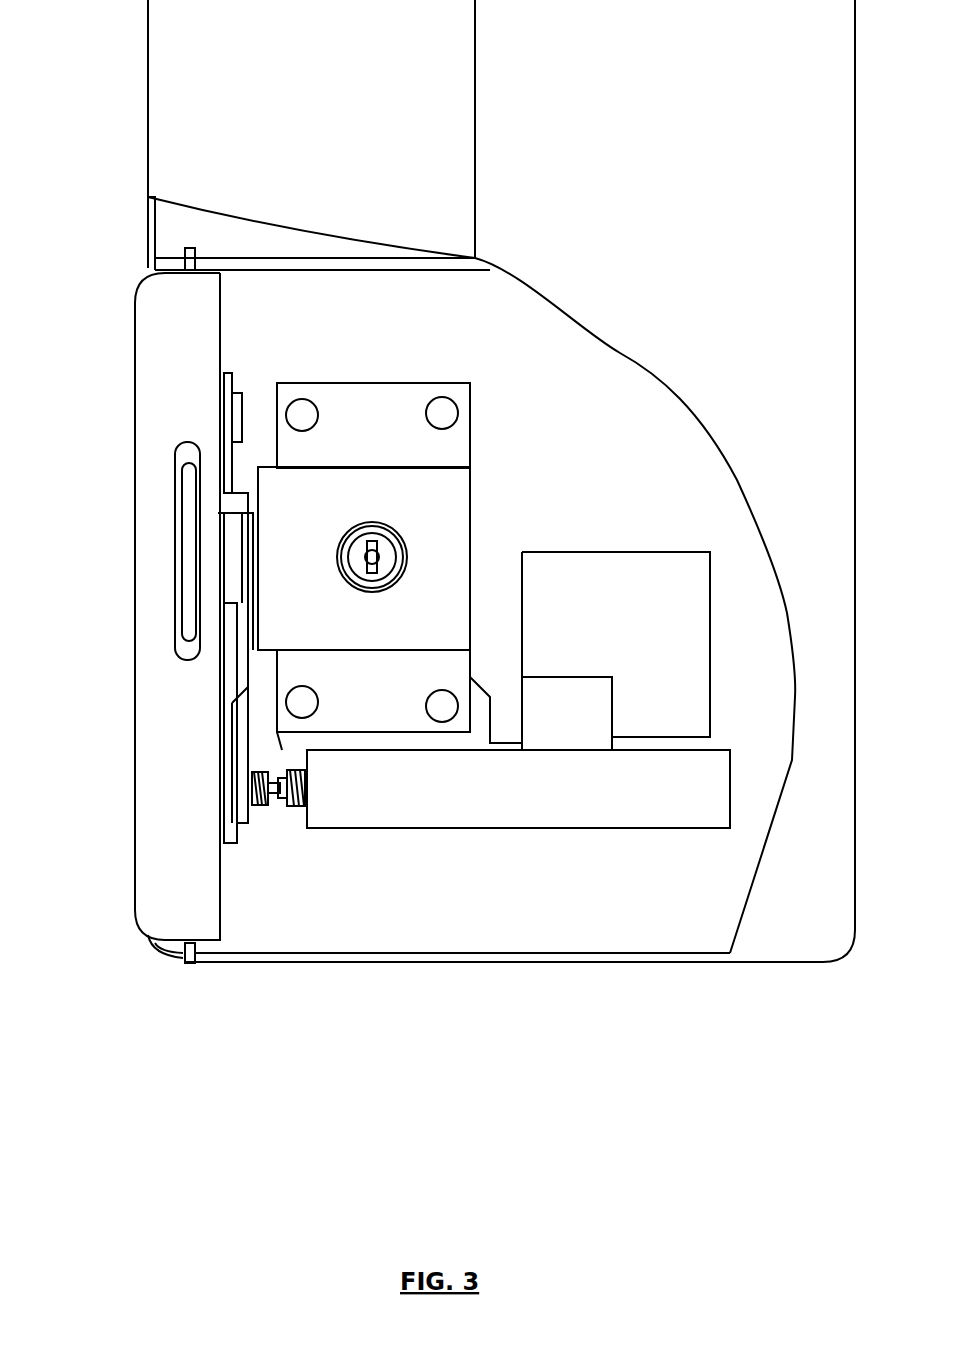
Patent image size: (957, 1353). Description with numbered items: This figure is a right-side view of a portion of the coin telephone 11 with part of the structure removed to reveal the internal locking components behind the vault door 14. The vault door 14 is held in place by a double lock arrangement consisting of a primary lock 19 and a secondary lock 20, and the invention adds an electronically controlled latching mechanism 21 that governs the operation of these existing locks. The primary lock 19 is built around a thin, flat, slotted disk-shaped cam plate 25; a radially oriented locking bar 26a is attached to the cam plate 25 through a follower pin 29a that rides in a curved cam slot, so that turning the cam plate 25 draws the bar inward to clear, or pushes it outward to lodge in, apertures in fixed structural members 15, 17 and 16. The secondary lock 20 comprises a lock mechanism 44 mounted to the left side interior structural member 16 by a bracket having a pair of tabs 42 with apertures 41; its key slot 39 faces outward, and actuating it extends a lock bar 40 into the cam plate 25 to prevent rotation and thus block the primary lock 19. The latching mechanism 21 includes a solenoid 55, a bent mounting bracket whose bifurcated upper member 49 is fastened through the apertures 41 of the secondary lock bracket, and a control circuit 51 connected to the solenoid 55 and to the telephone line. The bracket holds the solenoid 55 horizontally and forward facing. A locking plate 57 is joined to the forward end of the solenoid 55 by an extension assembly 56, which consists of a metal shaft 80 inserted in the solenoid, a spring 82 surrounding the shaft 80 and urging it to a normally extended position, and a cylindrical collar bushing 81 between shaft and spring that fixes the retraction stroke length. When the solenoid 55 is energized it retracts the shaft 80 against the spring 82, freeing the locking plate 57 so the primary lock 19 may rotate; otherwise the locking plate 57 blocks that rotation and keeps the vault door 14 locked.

The door assembly 11 is at (263, 183).
The vault door 14 is at (135, 633).
The fixed structural member 15 is at (155, 962).
The left side interior structural member 16 is at (758, 905).
The fixed structural member 17 is at (611, 473).
The primary lock 19 is at (237, 357).
The secondary lock 20 is at (478, 365).
The latching mechanism 21 is at (489, 838).
The cam plate 25 is at (244, 547).
The locking bar 26a is at (192, 248).
The follower pin 29a is at (242, 418).
The key slot 39 is at (397, 535).
The lock bar 40 is at (254, 582).
The apertures 41 is at (307, 420).
The tabs 42 is at (455, 443).
The lock mechanism 44 is at (455, 537).
The upper member 49 is at (435, 743).
The control circuit 51 is at (633, 577).
The solenoid 55 is at (384, 822).
The extension assembly 56 is at (273, 825).
The locking plate 57 is at (243, 830).
The shaft 80 is at (272, 780).
The collar bushing 81 is at (285, 803).
The spring 82 is at (305, 787).